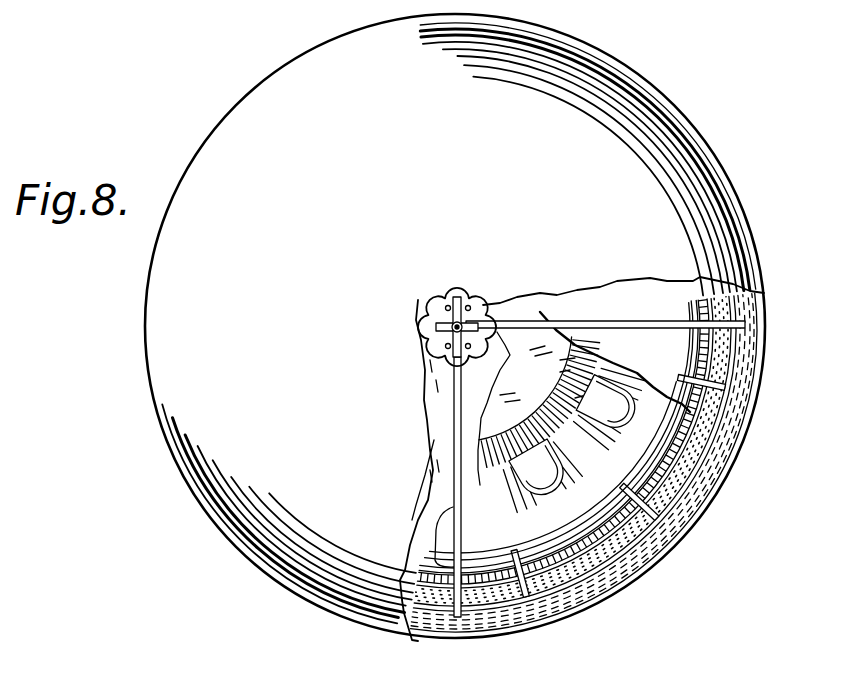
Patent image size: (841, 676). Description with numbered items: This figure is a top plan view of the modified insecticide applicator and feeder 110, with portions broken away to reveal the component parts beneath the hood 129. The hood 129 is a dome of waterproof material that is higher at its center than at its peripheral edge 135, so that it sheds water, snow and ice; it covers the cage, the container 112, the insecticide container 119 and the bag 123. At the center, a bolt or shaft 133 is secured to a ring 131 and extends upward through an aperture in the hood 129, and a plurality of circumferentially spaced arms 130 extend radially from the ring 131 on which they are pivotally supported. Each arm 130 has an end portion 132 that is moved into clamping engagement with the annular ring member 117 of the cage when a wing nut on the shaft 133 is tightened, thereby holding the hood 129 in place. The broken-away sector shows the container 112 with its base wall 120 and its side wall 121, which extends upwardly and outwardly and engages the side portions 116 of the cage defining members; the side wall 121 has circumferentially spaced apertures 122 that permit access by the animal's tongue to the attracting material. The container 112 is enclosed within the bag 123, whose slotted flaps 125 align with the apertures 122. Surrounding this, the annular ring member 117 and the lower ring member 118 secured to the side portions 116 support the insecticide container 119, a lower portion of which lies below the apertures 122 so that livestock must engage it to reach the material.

The insecticide applicator and feeder 110 is at (657, 68).
The container 112 is at (440, 528).
The side portion 116 is at (721, 411).
The annular ring member 117 is at (721, 367).
The lower ring member 118 is at (620, 582).
The insecticide container 119 is at (708, 501).
The base wall 120 is at (500, 420).
The side wall 121 is at (623, 383).
The apertures 122 is at (553, 452).
The bag 123 is at (610, 296).
The flaps 125 is at (560, 489).
The hood 129 is at (172, 342).
The arms 130 is at (620, 323).
The ring 131 is at (450, 313).
The end portion 132 is at (748, 318).
The shaft 133 is at (476, 297).
The peripheral edge 135 is at (153, 395).